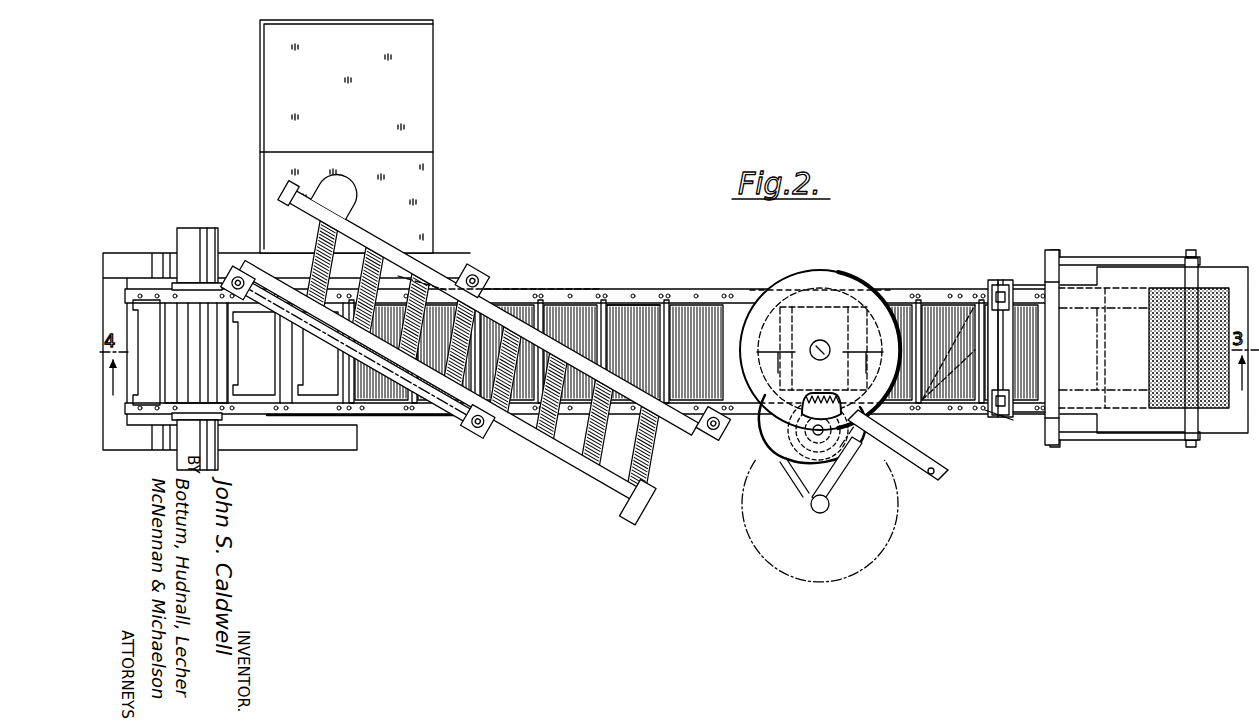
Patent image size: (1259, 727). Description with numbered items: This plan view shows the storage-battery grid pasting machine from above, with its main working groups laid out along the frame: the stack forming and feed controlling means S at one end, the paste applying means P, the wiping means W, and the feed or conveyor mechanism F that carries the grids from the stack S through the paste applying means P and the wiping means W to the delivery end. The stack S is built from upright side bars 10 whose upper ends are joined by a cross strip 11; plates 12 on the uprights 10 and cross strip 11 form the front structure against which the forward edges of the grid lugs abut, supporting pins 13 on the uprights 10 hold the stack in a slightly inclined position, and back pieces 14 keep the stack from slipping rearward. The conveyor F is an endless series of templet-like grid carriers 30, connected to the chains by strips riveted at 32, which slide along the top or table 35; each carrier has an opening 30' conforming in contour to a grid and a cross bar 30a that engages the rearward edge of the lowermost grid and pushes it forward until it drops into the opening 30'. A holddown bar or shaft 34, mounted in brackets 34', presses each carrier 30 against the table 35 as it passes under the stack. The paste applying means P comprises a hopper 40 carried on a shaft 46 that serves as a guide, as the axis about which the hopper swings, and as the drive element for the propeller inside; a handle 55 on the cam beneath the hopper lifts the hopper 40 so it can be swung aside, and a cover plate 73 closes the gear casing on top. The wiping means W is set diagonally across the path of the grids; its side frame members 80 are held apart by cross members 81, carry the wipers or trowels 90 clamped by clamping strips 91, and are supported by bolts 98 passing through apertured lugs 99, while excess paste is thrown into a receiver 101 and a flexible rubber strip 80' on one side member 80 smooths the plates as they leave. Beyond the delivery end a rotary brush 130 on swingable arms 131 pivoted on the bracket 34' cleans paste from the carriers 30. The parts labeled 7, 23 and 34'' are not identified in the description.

The cylinder 7 is at (186, 250).
The upright side bars 10 is at (1006, 300).
The cross strip 11 is at (983, 288).
The plates 12 is at (993, 417).
The supporting pins 13 is at (1058, 275).
The back pieces 14 is at (1013, 300).
The frame block 23 is at (192, 370).
The grid carriers 30 is at (655, 351).
The cross bar 30a is at (685, 300).
The opening 30' is at (310, 353).
The rivets 32 is at (582, 290).
The holddown bar 34 is at (1097, 347).
The brackets 34' is at (1089, 255).
The roller shaft end 34'' is at (1079, 448).
The table 35 is at (398, 276).
The hopper 40 is at (873, 310).
The shaft 46 is at (840, 458).
The handle 55 is at (930, 474).
The cover plate 73 is at (793, 445).
The side frame members 80 is at (483, 367).
The flexible rubber strip 80' is at (352, 349).
The cross members 81 is at (255, 258).
The wipers 90 is at (308, 255).
The clamping strips 91 is at (605, 458).
The bolts 98 is at (236, 276).
The apertured lugs 99 is at (226, 306).
The receiver 101 is at (419, 212).
The rotary brush 130 is at (1191, 318).
The swingable arms 131 is at (1144, 258).
The feed or conveyor mechanism F is at (629, 287).
The paste applying means P is at (835, 266).
The stack forming and feed controlling means S is at (1003, 279).
The wiping means W is at (492, 289).